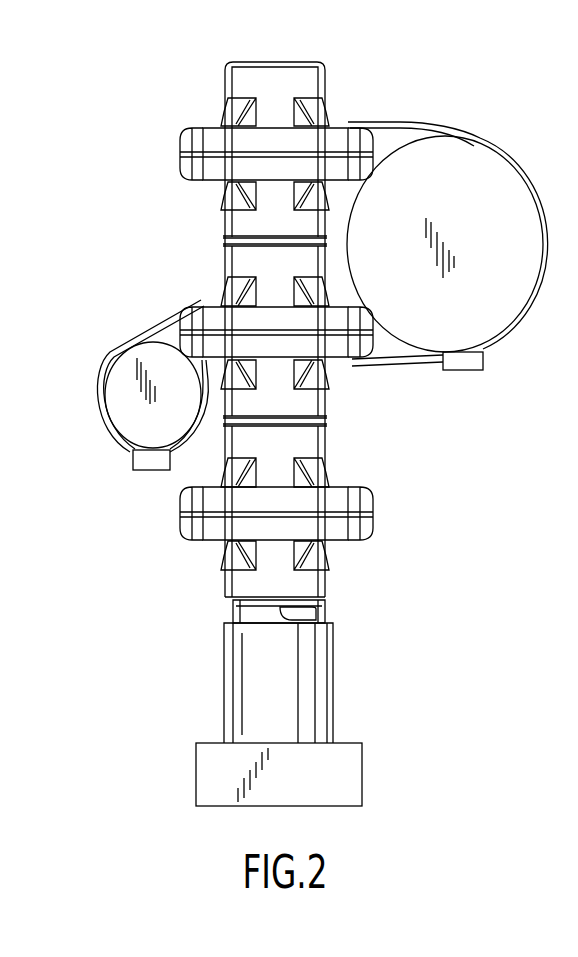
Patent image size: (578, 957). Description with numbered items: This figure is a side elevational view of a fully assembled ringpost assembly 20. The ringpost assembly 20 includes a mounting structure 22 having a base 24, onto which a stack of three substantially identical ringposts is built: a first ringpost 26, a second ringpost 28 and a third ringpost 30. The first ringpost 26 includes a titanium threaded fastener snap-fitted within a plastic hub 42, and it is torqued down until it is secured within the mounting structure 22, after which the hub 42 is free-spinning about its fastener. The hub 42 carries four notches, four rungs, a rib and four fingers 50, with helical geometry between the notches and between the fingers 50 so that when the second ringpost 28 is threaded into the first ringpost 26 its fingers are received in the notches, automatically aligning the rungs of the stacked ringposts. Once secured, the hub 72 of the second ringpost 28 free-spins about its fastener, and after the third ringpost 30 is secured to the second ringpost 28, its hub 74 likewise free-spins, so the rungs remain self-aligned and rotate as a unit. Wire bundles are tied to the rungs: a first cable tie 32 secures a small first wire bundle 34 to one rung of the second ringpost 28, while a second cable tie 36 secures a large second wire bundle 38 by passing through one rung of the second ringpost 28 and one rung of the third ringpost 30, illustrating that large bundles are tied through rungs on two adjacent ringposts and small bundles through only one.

The ringpost assembly 20 is at (157, 203).
The mounting structure 22 is at (352, 765).
The base 24 is at (333, 688).
The first ringpost 26 is at (375, 500).
The second ringpost 28 is at (336, 366).
The third ringpost 30 is at (214, 118).
The first cable tie 32 is at (146, 338).
The first wire bundle 34 is at (143, 422).
The second cable tie 36 is at (392, 122).
The second wire bundle 38 is at (466, 170).
The hub 42 is at (193, 525).
The fingers 50 is at (280, 613).
The hub 72 is at (220, 313).
The hub 74 is at (183, 140).